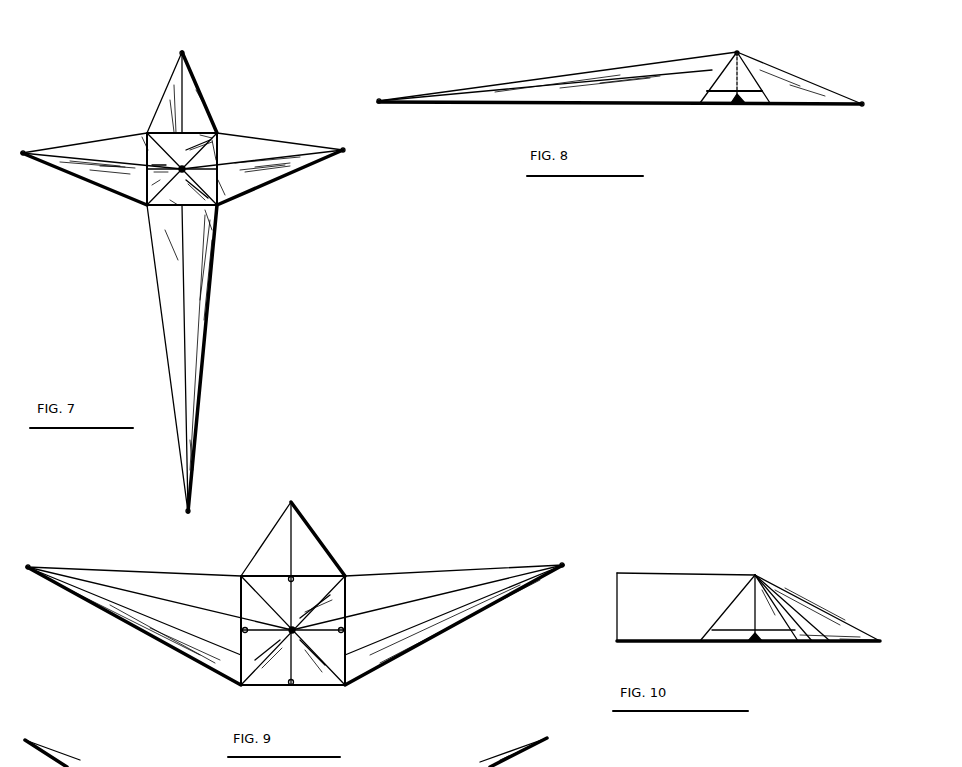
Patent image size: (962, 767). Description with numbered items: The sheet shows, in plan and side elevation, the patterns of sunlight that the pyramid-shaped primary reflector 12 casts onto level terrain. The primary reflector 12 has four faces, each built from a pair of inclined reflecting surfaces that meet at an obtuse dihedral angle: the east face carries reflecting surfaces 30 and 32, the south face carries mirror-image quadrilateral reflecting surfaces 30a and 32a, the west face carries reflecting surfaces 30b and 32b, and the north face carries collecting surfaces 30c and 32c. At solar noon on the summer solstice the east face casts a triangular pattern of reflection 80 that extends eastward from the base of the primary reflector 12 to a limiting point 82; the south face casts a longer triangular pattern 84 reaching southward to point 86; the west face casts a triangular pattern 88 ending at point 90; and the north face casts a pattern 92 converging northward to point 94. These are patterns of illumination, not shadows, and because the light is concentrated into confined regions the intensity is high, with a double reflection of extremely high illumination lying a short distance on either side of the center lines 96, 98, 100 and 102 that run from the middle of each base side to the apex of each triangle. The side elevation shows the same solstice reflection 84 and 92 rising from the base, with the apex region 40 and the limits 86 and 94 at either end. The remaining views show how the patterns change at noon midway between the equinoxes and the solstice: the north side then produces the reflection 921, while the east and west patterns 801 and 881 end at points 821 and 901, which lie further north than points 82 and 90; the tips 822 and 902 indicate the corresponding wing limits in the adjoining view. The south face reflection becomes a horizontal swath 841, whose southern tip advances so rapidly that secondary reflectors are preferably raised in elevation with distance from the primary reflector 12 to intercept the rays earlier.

In FIG. 7, the primary reflector 12 is at (217, 155).
In FIG. 8, the primary reflector 12 is at (745, 110).
In FIG. 9, the primary reflector 12 is at (335, 695).
In FIG. 7, the reflecting surface 30 is at (218, 153).
In FIG. 7, the quadrilateral reflecting surface 30a is at (212, 207).
In FIG. 7, the quadrilateral reflecting surface 30b is at (157, 180).
In FIG. 7, the quadrilateral collecting surface 30c is at (172, 137).
In FIG. 7, the reflecting surface 32 is at (218, 186).
In FIG. 7, the quadrilateral reflecting surface 32a is at (177, 203).
In FIG. 7, the quadrilateral reflecting surface 32b is at (135, 140).
In FIG. 7, the quadrilateral collecting surface 32c is at (198, 132).
In FIG. 7, the apex 40 is at (160, 255).
In FIG. 8, the apex 40 is at (738, 52).
In FIG. 7, the triangular pattern of reflection 80 is at (287, 150).
In FIG. 7, the point 82 is at (345, 151).
In FIG. 7, the pattern of reflection 84 is at (193, 377).
In FIG. 8, the pattern of reflection 84 is at (624, 70).
In FIG. 7, the point 86 is at (188, 512).
In FIG. 8, the point 86 is at (378, 101).
In FIG. 7, the pattern of reflection 88 is at (107, 148).
In FIG. 7, the point 90 is at (22, 153).
In FIG. 7, the pattern of reflection 92 is at (192, 85).
In FIG. 8, the pattern of reflection 92 is at (790, 80).
In FIG. 7, the point 94 is at (181, 50).
In FIG. 8, the point 94 is at (862, 104).
In FIG. 7, the line 96 is at (312, 168).
In FIG. 7, the line 98 is at (190, 446).
In FIG. 7, the line 100 is at (77, 163).
In FIG. 7, the line 102 is at (200, 130).
In FIG. 9, the east reflection pattern 801 is at (465, 618).
In FIG. 10, the east reflection pattern 801 is at (799, 643).
In FIG. 9, the point 821 is at (565, 565).
In FIG. 10, the point 821 is at (832, 643).
In FIG. 9, the wing tip 822 is at (547, 737).
In FIG. 10, the horizontal swath 841 is at (670, 583).
In FIG. 9, the west reflection pattern 881 is at (162, 617).
In FIG. 10, the west reflection pattern 881 is at (813, 643).
In FIG. 9, the point 901 is at (26, 567).
In FIG. 10, the point 901 is at (850, 643).
In FIG. 9, the wing tip 902 is at (25, 738).
In FIG. 9, the reflection from the north side 921 is at (270, 540).
In FIG. 10, the reflection from the north side 921 is at (807, 617).